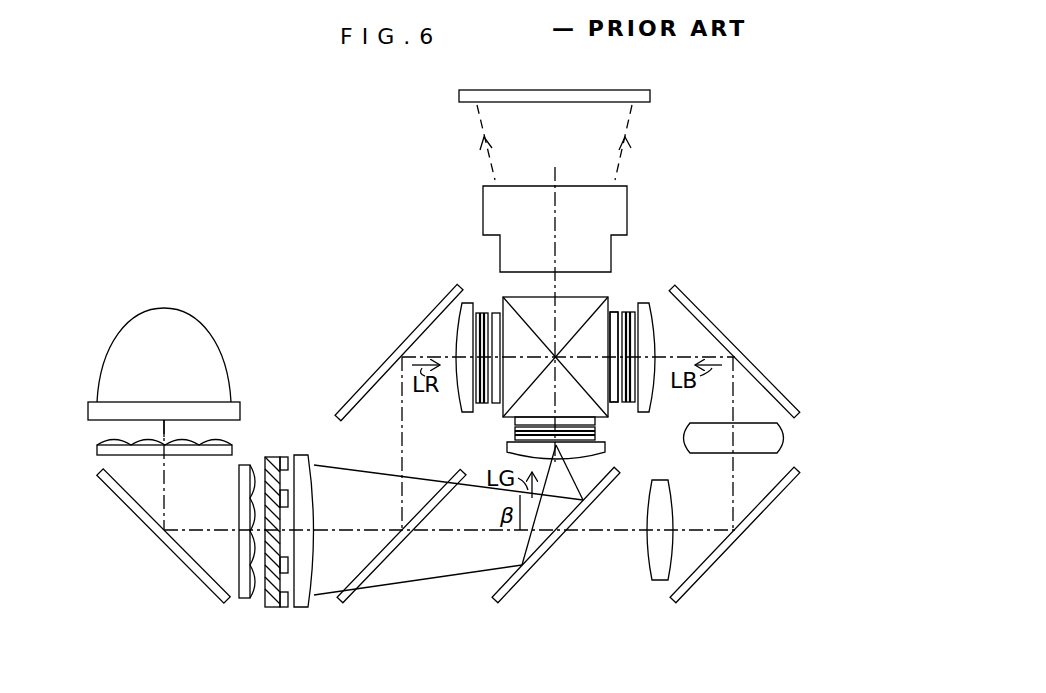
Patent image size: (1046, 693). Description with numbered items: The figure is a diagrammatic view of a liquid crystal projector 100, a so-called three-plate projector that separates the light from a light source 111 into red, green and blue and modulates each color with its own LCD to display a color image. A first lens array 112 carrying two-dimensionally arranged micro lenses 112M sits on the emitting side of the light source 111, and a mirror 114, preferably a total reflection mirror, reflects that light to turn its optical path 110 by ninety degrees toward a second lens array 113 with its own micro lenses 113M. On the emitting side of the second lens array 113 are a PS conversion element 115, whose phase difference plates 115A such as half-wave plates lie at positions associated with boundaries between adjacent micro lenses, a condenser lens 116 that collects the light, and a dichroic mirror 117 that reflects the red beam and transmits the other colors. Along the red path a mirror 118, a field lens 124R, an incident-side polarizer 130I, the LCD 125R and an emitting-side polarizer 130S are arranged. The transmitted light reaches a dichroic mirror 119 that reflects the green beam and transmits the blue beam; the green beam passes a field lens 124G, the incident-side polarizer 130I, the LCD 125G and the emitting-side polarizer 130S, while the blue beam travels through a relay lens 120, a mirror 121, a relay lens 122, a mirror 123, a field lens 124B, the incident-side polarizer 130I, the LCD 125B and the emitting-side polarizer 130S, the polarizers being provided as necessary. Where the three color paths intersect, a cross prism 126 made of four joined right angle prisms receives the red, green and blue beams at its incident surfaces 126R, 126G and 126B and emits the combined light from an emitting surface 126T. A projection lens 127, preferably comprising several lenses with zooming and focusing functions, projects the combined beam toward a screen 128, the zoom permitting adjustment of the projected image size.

The liquid crystal projector 100 is at (280, 186).
The optical path 110 is at (170, 505).
The light source 111 is at (140, 312).
The first lens array 112 is at (126, 460).
The micro lenses 112M is at (100, 445).
The second lens array 113 is at (222, 571).
The micro lenses 113M is at (253, 605).
The mirror 114 is at (142, 530).
The PS conversion element 115 is at (313, 567).
The phase difference plate 115A is at (285, 608).
The condenser lens 116 is at (312, 602).
The dichroic mirror 117 is at (356, 596).
The mirror 118 is at (380, 370).
The dichroic mirror 119 is at (520, 605).
The relay lens 120 is at (658, 582).
The mirror 121 is at (722, 558).
The relay lens 122 is at (785, 437).
The mirror 123 is at (765, 375).
The field lens 124R is at (463, 302).
The field lens 124G is at (508, 462).
The field lens 124B is at (655, 400).
The LCD 125R is at (484, 312).
The LCD 125G is at (512, 440).
The LCD 125B is at (630, 405).
The incident surface 126R is at (496, 312).
The incident surface 126G is at (512, 420).
The incident surface 126B is at (614, 405).
The cross prism 126 is at (608, 297).
The emitting surface 126T is at (612, 310).
The projection lens 127 is at (627, 200).
The screen 128 is at (650, 96).
The incident-side polarizer 130I is at (478, 312).
The emitting-side polarizer 130S is at (675, 495).